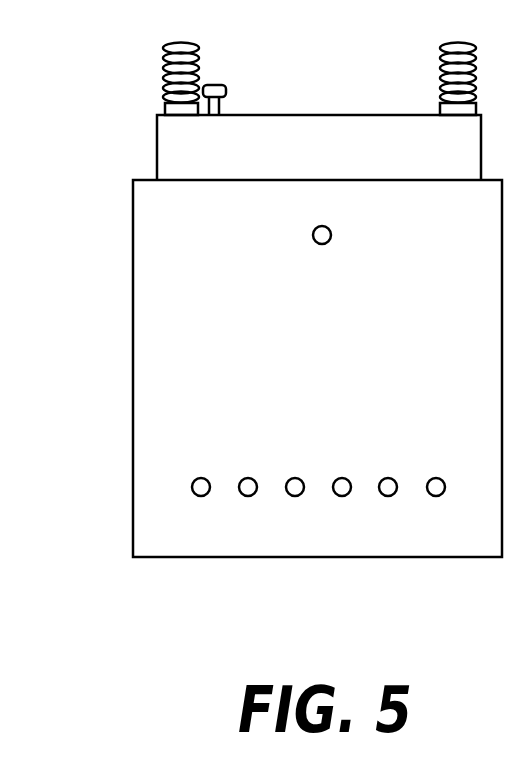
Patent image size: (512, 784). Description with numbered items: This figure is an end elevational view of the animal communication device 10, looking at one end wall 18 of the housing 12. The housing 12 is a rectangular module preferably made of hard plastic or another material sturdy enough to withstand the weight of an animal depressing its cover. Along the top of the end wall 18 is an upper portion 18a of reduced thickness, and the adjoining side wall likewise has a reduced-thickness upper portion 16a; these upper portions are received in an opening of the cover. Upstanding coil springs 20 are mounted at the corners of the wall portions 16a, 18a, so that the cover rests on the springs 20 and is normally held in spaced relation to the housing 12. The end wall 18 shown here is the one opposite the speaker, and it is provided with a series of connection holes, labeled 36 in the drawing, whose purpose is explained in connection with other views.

The animal communication device 10 is at (147, 575).
The housing 12 is at (420, 538).
The upper portion of side wall 16a is at (219, 86).
The end wall 18 is at (153, 365).
The upper portion of end wall 18a is at (360, 157).
The coil spring 20 is at (164, 84).
The apertures 36 is at (338, 478).